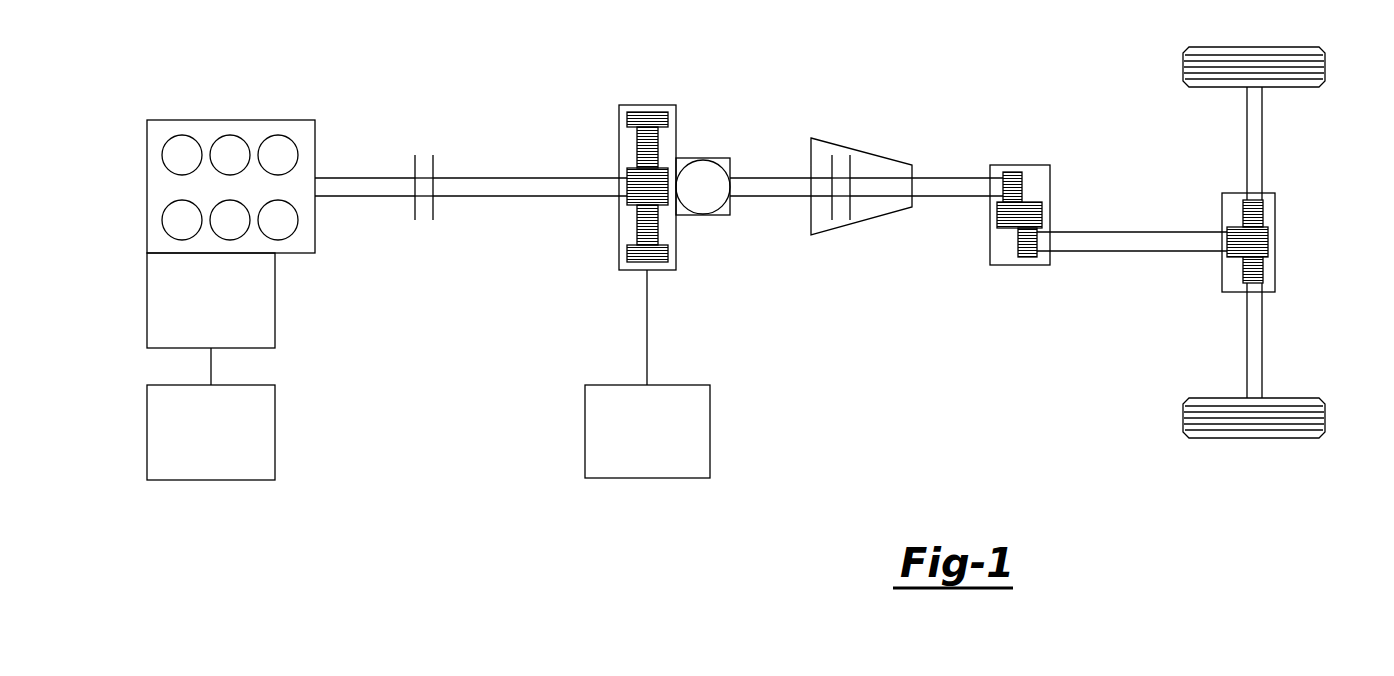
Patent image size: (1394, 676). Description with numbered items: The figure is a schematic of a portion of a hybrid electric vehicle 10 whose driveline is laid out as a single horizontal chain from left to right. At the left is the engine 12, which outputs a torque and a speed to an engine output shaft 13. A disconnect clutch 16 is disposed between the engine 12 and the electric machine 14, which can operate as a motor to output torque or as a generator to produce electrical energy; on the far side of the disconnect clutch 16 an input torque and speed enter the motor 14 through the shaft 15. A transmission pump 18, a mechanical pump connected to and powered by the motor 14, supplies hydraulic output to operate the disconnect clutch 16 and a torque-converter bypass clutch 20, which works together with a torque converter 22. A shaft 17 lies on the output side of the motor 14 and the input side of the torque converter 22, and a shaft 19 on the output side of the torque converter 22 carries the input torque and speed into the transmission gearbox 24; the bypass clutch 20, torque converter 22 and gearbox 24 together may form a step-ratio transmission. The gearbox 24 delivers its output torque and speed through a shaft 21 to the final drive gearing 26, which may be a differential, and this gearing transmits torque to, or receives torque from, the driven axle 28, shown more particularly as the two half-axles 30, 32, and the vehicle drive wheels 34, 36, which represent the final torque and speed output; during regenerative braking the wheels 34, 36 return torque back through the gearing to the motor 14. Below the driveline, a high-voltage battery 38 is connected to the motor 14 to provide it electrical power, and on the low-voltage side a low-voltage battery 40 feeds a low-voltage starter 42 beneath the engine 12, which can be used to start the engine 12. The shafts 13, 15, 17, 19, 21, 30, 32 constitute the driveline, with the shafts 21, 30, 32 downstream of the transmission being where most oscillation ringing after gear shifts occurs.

The vehicle 10 is at (979, 52).
The engine 12 is at (230, 120).
The engine output shaft 13 is at (360, 178).
The electric machine 14 is at (647, 105).
The shaft 15 is at (543, 178).
The disconnect clutch 16 is at (437, 160).
The shaft 17 is at (769, 178).
The transmission pump 18 is at (703, 158).
The shaft 19 is at (956, 178).
The torque-converter bypass clutch 20 is at (852, 164).
The shaft 21 is at (1104, 232).
The torque converter 22 is at (830, 138).
The transmission gearbox 24 is at (1020, 165).
The final drive gearing 26 is at (1276, 208).
The driven axle 28 is at (1270, 318).
The half-axle 30 is at (1262, 366).
The half-axle 32 is at (1247, 118).
The vehicle drive wheel 34 is at (1326, 414).
The vehicle drive wheel 36 is at (1326, 65).
The high-voltage battery 38 is at (647, 478).
The low-voltage battery 40 is at (211, 480).
The low-voltage starter 42 is at (275, 300).